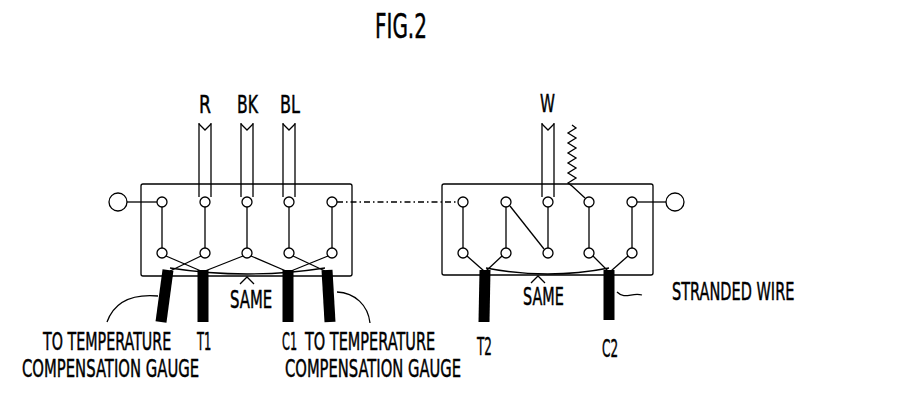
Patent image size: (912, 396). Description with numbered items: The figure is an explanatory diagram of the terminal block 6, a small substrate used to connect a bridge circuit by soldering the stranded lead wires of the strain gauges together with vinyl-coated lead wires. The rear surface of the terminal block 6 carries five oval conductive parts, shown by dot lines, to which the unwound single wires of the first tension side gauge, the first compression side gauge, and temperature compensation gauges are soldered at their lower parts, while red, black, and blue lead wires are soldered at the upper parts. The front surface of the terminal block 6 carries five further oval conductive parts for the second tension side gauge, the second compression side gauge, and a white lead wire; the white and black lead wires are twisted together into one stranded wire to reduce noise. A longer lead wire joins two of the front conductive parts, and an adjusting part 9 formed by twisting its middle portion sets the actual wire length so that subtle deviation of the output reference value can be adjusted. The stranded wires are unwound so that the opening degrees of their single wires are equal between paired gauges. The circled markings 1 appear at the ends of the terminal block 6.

The connection point 1 is at (396, 202).
The terminal block 6 is at (160, 170).
The adjusting part 9 is at (577, 152).